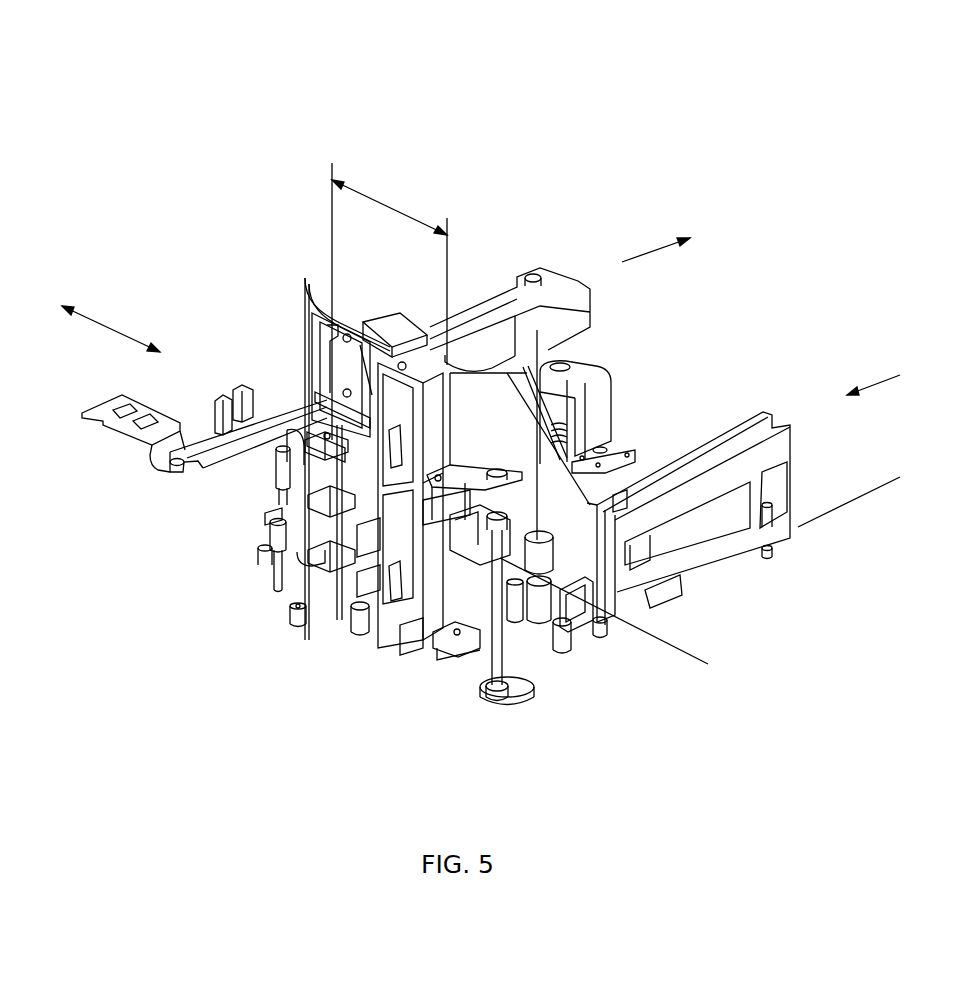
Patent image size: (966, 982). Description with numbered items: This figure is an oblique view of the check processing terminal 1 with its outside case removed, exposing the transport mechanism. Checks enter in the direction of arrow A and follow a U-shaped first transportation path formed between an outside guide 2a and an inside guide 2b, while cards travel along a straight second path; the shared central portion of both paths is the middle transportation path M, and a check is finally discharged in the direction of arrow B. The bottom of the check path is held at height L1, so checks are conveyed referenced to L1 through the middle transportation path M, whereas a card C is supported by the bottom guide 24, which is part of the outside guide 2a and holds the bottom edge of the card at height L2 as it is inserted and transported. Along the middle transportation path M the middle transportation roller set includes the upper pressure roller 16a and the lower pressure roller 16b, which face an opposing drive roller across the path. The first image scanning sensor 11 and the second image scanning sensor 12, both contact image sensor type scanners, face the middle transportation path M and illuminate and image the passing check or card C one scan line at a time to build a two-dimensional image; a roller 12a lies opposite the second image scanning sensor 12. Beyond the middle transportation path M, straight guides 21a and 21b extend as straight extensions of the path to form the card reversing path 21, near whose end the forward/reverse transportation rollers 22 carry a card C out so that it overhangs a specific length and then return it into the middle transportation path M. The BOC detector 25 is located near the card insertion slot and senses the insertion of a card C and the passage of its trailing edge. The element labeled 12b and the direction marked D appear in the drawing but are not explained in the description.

The check processing terminal 1 is at (502, 150).
The outside guide 2a is at (475, 367).
The inside guide 2b is at (455, 362).
The first image scanning sensor 11 is at (395, 323).
The second image scanning sensor 12 is at (403, 320).
The roller 12a is at (342, 337).
The lower plate portion 12b is at (337, 567).
The upper pressure roller 16a is at (308, 414).
The lower pressure roller 16b is at (312, 514).
The card reversing path 21 is at (590, 528).
The straight guide 21a is at (460, 652).
The straight guide 21b is at (483, 470).
The forward/reverse transportation rollers 22 is at (497, 648).
The bottom guide 24 is at (250, 427).
The BOC detector 25 is at (220, 420).
The height L1 is at (868, 490).
The height L2 is at (623, 622).
The middle transportation path M is at (389, 301).
The arrow A is at (894, 374).
The arrow B is at (671, 240).
The card C is at (184, 361).
The direction D is at (97, 317).